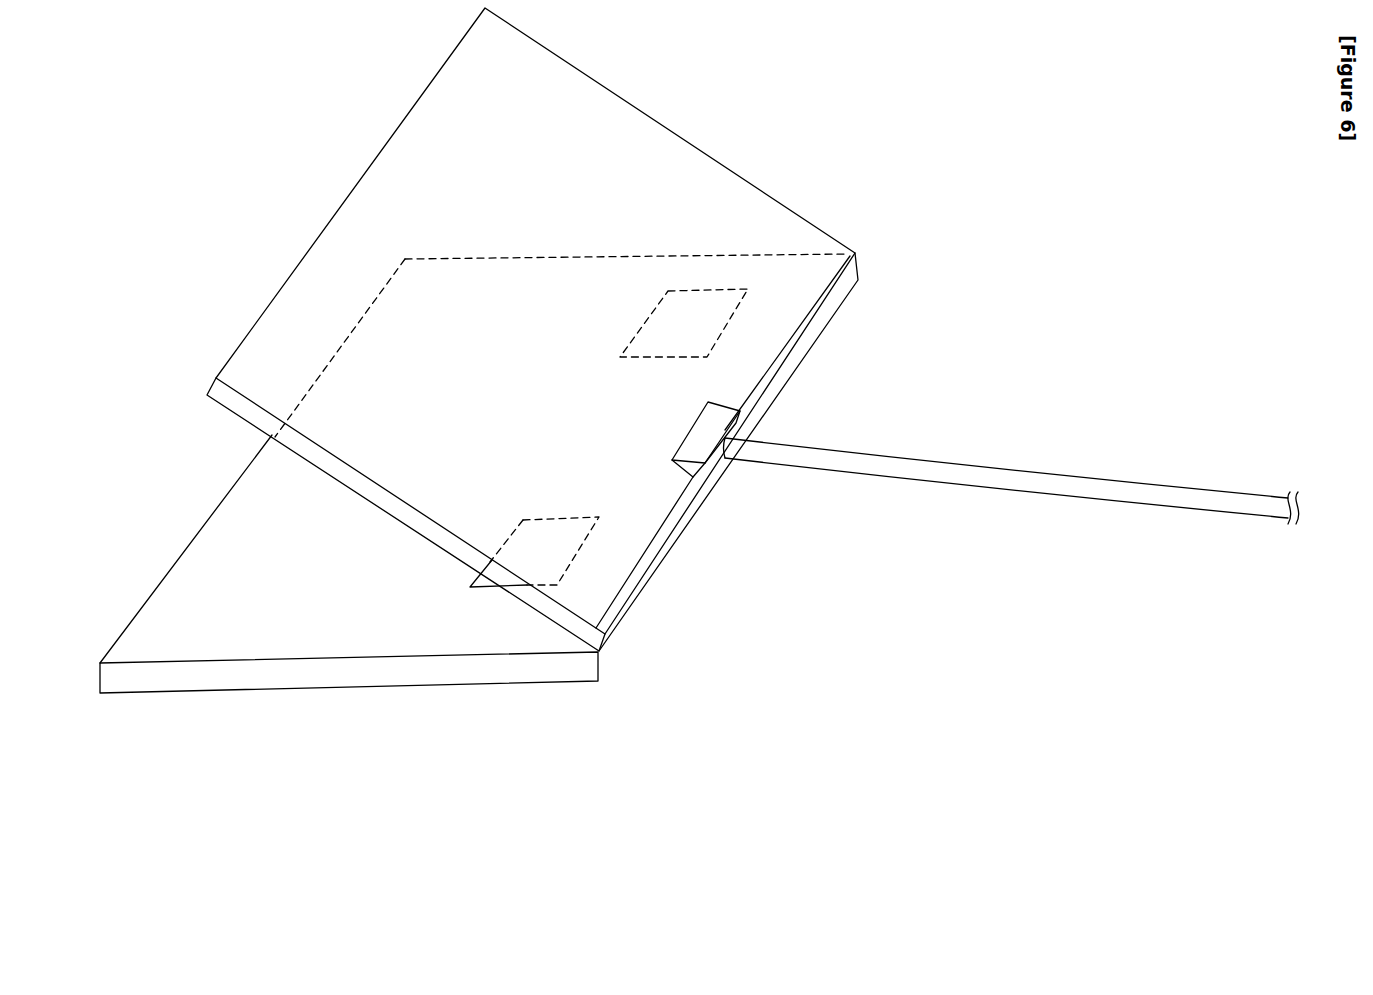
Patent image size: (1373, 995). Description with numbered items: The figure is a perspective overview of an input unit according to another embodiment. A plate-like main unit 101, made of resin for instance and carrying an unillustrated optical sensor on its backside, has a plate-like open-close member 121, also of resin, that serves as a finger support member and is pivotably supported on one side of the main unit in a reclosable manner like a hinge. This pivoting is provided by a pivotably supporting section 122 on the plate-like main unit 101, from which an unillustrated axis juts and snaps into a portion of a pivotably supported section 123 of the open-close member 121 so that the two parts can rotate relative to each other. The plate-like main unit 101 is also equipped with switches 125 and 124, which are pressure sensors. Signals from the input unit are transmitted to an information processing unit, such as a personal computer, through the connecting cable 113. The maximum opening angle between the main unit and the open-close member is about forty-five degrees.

The plate-like main unit 101 is at (264, 678).
The connecting cable 113 is at (978, 475).
The open-close member 121 is at (610, 140).
The pivotably supporting section 122 is at (713, 420).
The pivotably supported section 123 is at (747, 388).
The switch 124 is at (665, 336).
The switch 125 is at (535, 537).